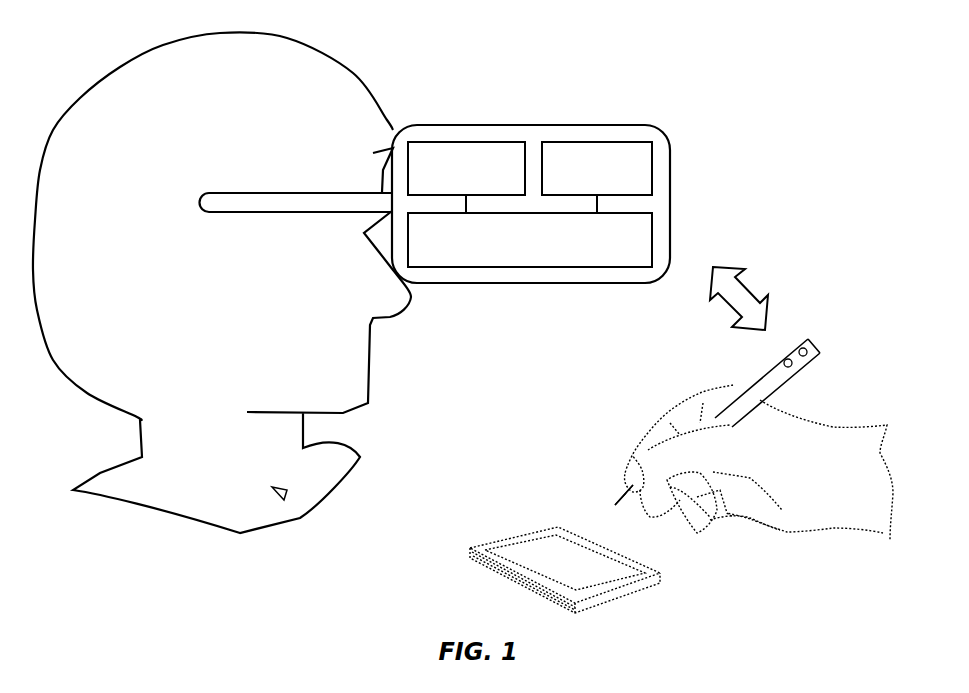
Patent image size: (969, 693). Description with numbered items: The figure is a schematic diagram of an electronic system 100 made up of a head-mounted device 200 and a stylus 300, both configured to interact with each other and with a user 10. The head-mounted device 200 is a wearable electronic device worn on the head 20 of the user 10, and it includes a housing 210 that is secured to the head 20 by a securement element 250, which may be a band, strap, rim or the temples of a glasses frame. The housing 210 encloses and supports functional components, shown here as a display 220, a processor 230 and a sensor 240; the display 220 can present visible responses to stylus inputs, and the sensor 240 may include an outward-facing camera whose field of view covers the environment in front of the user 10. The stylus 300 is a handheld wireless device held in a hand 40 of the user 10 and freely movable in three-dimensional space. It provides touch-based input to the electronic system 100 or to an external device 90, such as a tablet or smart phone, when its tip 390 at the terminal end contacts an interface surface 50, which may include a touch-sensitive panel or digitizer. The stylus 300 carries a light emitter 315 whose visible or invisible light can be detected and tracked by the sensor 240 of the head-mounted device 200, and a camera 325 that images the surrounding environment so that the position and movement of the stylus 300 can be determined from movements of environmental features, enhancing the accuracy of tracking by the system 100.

The user 10 is at (82, 98).
The head 20 is at (381, 93).
The hand 40 is at (857, 427).
The interface surface 50 is at (556, 543).
The external device 90 is at (542, 527).
The electronic system 100 is at (811, 129).
The head-mounted device 200 is at (568, 195).
The housing 210 is at (553, 125).
The display 220 is at (500, 142).
The processor 230 is at (474, 268).
The sensor 240 is at (617, 142).
The securement element 250 is at (257, 213).
The stylus 300 is at (732, 393).
The light emitter 315 is at (808, 354).
The camera 325 is at (791, 369).
The tip 390 is at (612, 504).